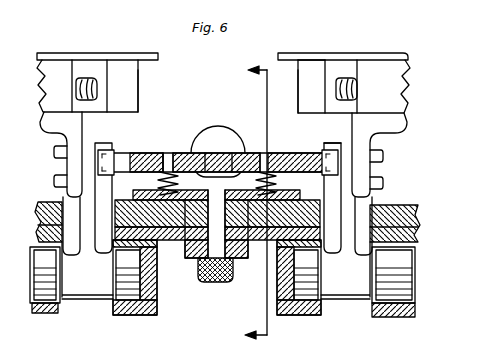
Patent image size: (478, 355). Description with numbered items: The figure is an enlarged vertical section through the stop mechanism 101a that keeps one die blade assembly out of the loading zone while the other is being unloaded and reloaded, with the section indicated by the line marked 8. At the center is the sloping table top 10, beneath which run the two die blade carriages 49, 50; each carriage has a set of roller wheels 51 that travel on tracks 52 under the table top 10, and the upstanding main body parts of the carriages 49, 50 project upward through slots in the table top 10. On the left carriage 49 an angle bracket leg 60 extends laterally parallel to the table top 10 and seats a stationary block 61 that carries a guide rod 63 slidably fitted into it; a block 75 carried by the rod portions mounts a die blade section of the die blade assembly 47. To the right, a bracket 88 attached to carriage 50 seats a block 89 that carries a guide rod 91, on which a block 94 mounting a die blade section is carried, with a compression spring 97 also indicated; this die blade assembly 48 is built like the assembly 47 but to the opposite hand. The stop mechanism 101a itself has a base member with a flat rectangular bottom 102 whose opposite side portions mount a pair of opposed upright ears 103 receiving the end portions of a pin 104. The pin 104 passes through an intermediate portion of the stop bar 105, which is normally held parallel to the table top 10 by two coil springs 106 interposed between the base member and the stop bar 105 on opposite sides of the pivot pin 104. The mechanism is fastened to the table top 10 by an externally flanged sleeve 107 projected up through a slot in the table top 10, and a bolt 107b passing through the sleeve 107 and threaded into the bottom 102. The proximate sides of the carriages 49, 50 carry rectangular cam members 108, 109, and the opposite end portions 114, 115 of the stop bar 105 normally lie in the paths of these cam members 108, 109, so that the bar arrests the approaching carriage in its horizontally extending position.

The section line 8- 8 is at (235, 204).
The table top 10 is at (265, 242).
The die blade assembly 47 is at (98, 53).
The die blade assembly 48 is at (350, 60).
The carriage 49 is at (88, 293).
The carriage 50 is at (348, 293).
The roller wheels 51 is at (58, 298).
The tracks 52 is at (42, 313).
The bracket leg 60 is at (50, 129).
The stationary block 61 is at (55, 70).
The guide rod 63 is at (85, 80).
The block 75 is at (138, 82).
The bracket 88 is at (396, 123).
The block 89 is at (383, 81).
The guide rod 91 is at (356, 84).
The block 94 is at (313, 70).
The compression spring 97 is at (308, 91).
The stop mechanism 101a is at (200, 138).
The bottom 102 is at (134, 194).
The upright ears 103 is at (214, 136).
The pin 104 is at (230, 145).
The stop bar 105 is at (153, 155).
The coil springs 106 is at (160, 184).
The externally flanged sleeve 107 is at (188, 258).
The bolt 107b is at (216, 283).
The cam member 108 is at (104, 150).
The cam member 109 is at (334, 143).
The end portion of stop bar 114 is at (122, 160).
The end portion of stop bar 115 is at (328, 153).